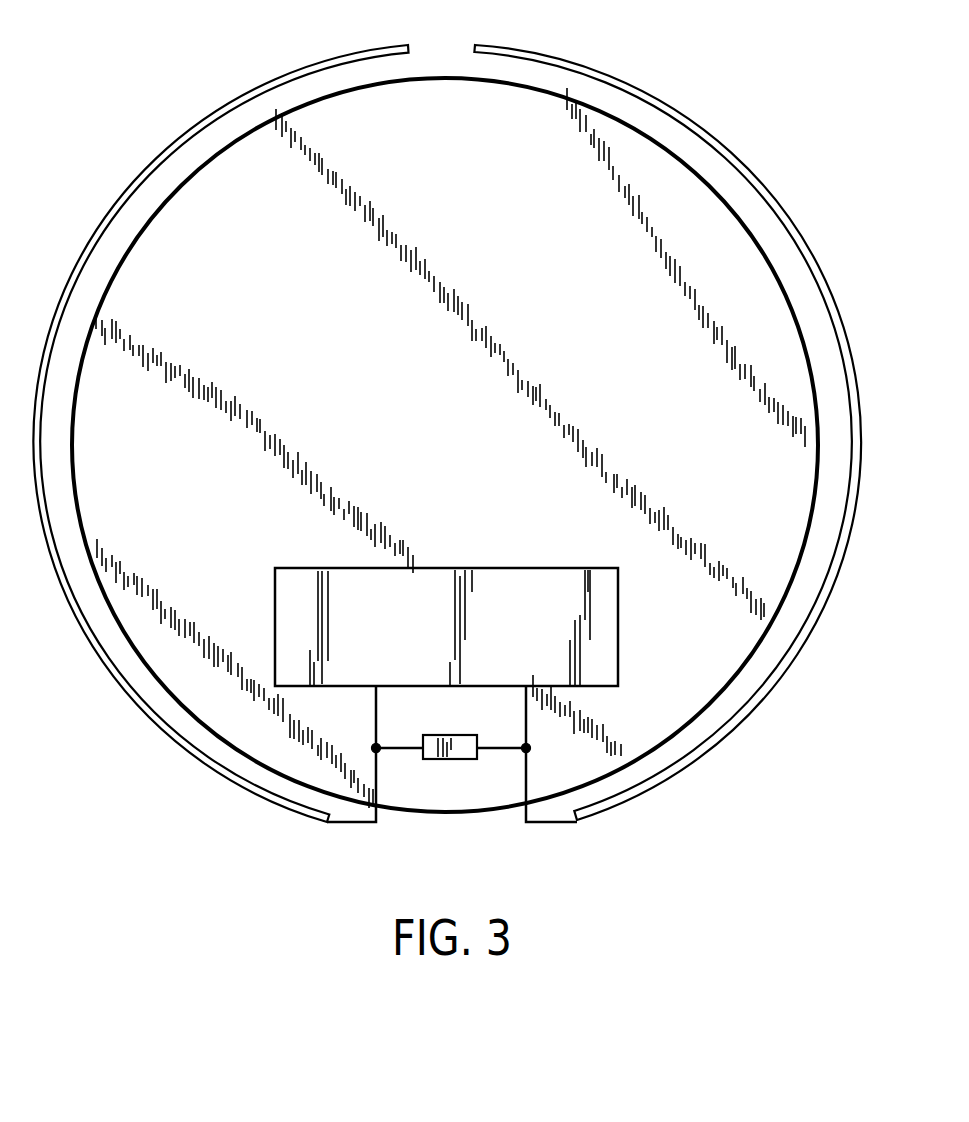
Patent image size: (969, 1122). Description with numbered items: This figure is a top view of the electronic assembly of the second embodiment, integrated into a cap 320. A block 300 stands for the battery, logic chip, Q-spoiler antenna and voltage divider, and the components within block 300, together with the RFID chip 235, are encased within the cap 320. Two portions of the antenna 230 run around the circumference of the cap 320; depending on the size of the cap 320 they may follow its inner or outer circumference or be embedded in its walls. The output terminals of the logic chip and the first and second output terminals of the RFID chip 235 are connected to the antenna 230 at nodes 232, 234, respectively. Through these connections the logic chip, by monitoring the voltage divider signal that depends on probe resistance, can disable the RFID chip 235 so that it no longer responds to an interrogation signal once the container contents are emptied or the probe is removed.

The cap 320 is at (737, 677).
The antenna 230 is at (287, 815).
The block 300 is at (498, 567).
The node 232 is at (526, 748).
The node 234 is at (376, 748).
The RFID chip 235 is at (478, 757).